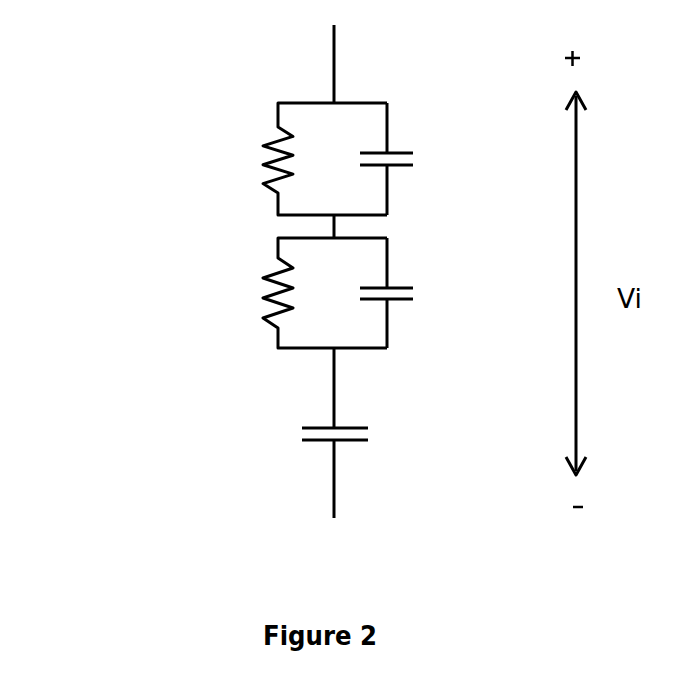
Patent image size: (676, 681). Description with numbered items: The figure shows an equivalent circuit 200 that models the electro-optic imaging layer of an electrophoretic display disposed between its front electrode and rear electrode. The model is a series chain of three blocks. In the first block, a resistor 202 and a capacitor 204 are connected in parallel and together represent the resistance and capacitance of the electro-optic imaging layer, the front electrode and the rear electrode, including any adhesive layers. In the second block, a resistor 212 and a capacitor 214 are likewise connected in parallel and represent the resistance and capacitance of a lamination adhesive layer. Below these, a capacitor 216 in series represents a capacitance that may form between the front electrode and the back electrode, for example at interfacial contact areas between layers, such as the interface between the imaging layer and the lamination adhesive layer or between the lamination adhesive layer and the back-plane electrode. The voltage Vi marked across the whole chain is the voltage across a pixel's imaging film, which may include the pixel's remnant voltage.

The equivalent circuit 200 is at (55, 37).
The resistor 202 is at (248, 147).
The capacitor 204 is at (422, 155).
The resistor 212 is at (255, 282).
The capacitor 214 is at (427, 290).
The capacitor 216 is at (388, 429).